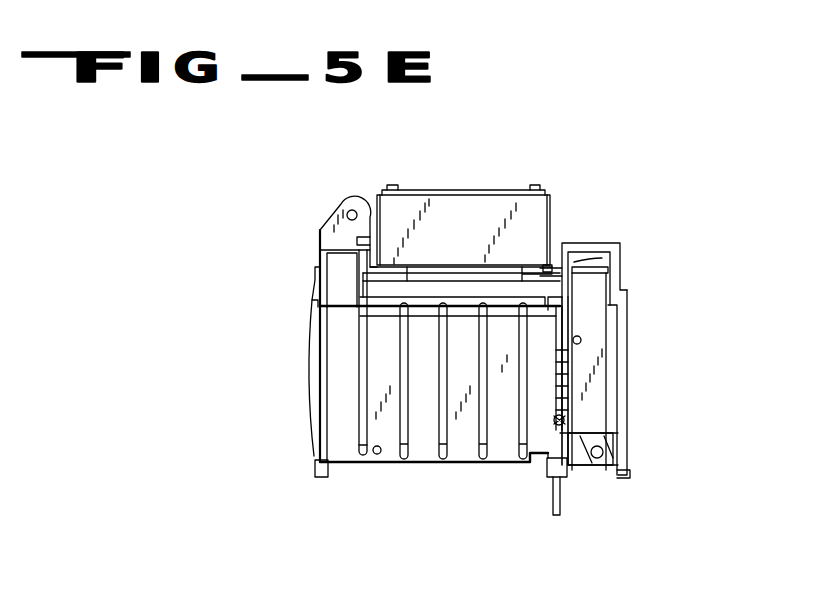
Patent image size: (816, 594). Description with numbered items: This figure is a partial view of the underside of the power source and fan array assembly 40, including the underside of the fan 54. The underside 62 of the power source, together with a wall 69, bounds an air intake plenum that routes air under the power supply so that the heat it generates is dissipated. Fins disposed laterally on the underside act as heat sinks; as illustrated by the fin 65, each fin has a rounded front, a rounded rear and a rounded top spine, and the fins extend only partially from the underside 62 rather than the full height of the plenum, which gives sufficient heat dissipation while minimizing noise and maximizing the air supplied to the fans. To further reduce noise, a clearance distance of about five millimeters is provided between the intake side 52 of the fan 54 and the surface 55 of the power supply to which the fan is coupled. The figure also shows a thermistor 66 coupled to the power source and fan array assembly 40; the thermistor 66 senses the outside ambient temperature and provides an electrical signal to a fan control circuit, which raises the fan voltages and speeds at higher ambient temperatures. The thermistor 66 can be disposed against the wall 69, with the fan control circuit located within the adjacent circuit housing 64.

The power source and fan array assembly 40 is at (630, 474).
The intake side of fan 52 is at (552, 281).
The fan 54 is at (552, 202).
The surface of power supply 55 is at (565, 278).
The underside of power source 62 is at (428, 392).
The circuit housing 64 is at (604, 337).
The fin 65 is at (558, 425).
The thermistor 66 is at (547, 453).
The wall 69 is at (553, 505).